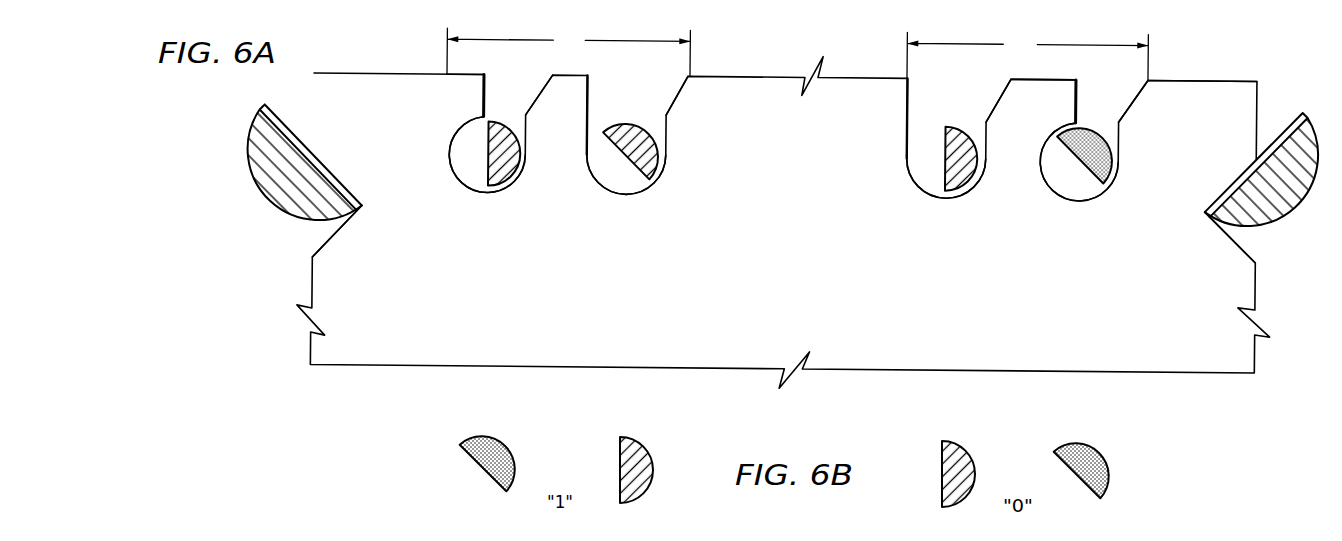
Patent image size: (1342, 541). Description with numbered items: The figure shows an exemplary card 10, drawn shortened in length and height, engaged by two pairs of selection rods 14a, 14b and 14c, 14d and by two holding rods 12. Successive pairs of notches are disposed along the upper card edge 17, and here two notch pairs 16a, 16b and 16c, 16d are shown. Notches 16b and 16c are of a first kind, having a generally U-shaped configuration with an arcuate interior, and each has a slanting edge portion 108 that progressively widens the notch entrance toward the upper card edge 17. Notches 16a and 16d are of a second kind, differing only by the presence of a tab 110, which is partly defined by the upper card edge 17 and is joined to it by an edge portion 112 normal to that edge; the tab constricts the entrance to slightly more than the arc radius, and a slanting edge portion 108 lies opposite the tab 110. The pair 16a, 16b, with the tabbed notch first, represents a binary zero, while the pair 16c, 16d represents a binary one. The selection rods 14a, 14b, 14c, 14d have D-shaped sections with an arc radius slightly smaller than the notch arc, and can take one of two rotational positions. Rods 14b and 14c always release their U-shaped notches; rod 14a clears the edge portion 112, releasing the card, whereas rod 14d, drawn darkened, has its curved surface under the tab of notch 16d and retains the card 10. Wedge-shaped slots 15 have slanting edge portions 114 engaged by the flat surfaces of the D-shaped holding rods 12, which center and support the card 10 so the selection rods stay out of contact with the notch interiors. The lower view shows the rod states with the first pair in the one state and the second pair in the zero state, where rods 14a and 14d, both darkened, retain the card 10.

In FIG. 6A, the card 10 is at (806, 241).
In FIG. 6A, the holding rod 12 is at (272, 123).
In FIG. 6A, the selection rod 14a is at (513, 153).
In FIG. 6B, the selection rod 14a is at (497, 440).
In FIG. 6A, the selection rod 14b is at (632, 157).
In FIG. 6B, the selection rod 14b is at (637, 437).
In FIG. 6A, the selection rod 14c is at (972, 163).
In FIG. 6B, the selection rod 14c is at (950, 450).
In FIG. 6A, the selection rod 14d is at (1024, 207).
In FIG. 6B, the selection rod 14d is at (1080, 443).
In FIG. 6A, the card slot 15 is at (337, 226).
In FIG. 6A, the notch 16a is at (473, 170).
In FIG. 6A, the notch 16b is at (655, 128).
In FIG. 6A, the notch 16c is at (936, 171).
In FIG. 6A, the notch 16d is at (1095, 127).
In FIG. 6A, the upper card edge 17 is at (1168, 80).
In FIG. 6A, the slanting edge portion 108 is at (528, 113).
In FIG. 6A, the tab 110 is at (470, 97).
In FIG. 6A, the edge portion 112 is at (488, 101).
In FIG. 6A, the edge portion 114 is at (326, 168).